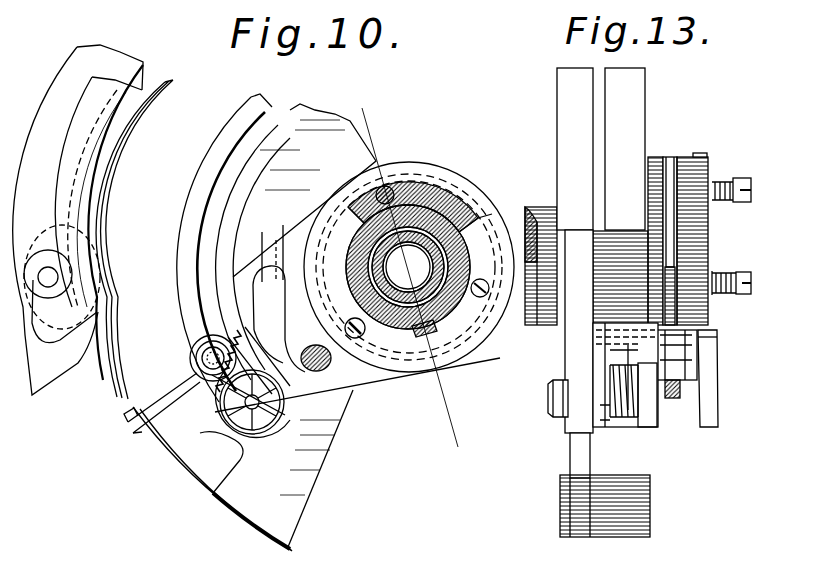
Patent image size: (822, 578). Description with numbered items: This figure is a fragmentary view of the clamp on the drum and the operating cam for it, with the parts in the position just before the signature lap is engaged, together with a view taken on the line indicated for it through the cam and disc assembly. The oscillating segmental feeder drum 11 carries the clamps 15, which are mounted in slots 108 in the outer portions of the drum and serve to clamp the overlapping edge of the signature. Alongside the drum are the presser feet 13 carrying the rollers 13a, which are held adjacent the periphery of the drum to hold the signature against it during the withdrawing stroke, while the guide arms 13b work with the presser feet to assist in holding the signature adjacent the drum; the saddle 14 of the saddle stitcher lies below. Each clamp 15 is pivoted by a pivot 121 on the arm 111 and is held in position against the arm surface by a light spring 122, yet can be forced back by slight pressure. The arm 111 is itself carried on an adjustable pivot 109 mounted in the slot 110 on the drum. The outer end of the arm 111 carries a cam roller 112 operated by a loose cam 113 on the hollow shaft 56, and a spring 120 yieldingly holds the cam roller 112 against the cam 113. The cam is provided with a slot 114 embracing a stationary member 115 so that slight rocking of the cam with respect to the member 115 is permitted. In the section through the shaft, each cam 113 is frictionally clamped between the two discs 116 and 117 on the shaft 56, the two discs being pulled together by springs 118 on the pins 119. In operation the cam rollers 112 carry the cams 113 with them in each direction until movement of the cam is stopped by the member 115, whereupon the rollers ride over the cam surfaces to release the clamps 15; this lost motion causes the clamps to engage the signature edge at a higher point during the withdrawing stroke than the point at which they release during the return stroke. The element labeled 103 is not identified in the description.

In FIG. 13, the oscillating segmental feeder drum 11 is at (650, 492).
In FIG. 10, the presser feet 13 is at (72, 78).
In FIG. 10, the rollers 13a is at (63, 292).
In FIG. 10, the guide arms 13b is at (50, 380).
In FIG. 10, the saddle 14 is at (385, 140).
In FIG. 10, the clamps 15 is at (203, 380).
In FIG. 13, the clamps 15 is at (605, 347).
In FIG. 10, the hollow shaft 56 is at (420, 222).
In FIG. 13, the hollow shaft 56 is at (527, 313).
In FIG. 10, the lever foot 103 is at (140, 412).
In FIG. 10, the slots 108 is at (182, 480).
In FIG. 10, the adjustable pivot 109 is at (233, 413).
In FIG. 10, the slot 110 is at (225, 185).
In FIG. 10, the arm 111 is at (217, 407).
In FIG. 10, the cam roller 112 is at (207, 342).
In FIG. 13, the cam roller 112 is at (708, 323).
In FIG. 10, the loose cam 113 is at (230, 320).
In FIG. 13, the loose cam 113 is at (670, 158).
In FIG. 10, the slot 114 is at (272, 282).
In FIG. 10, the stationary member 115 is at (340, 377).
In FIG. 13, the stationary member 115 is at (720, 390).
In FIG. 13, the disc 116 is at (652, 158).
In FIG. 10, the disc 117 is at (468, 348).
In FIG. 13, the disc 117 is at (697, 156).
In FIG. 13, the springs 118 is at (718, 272).
In FIG. 10, the pins 119 is at (364, 333).
In FIG. 13, the pins 119 is at (747, 273).
In FIG. 13, the spring 120 is at (620, 417).
In FIG. 10, the pivot 121 is at (203, 360).
In FIG. 10, the light spring 122 is at (279, 319).